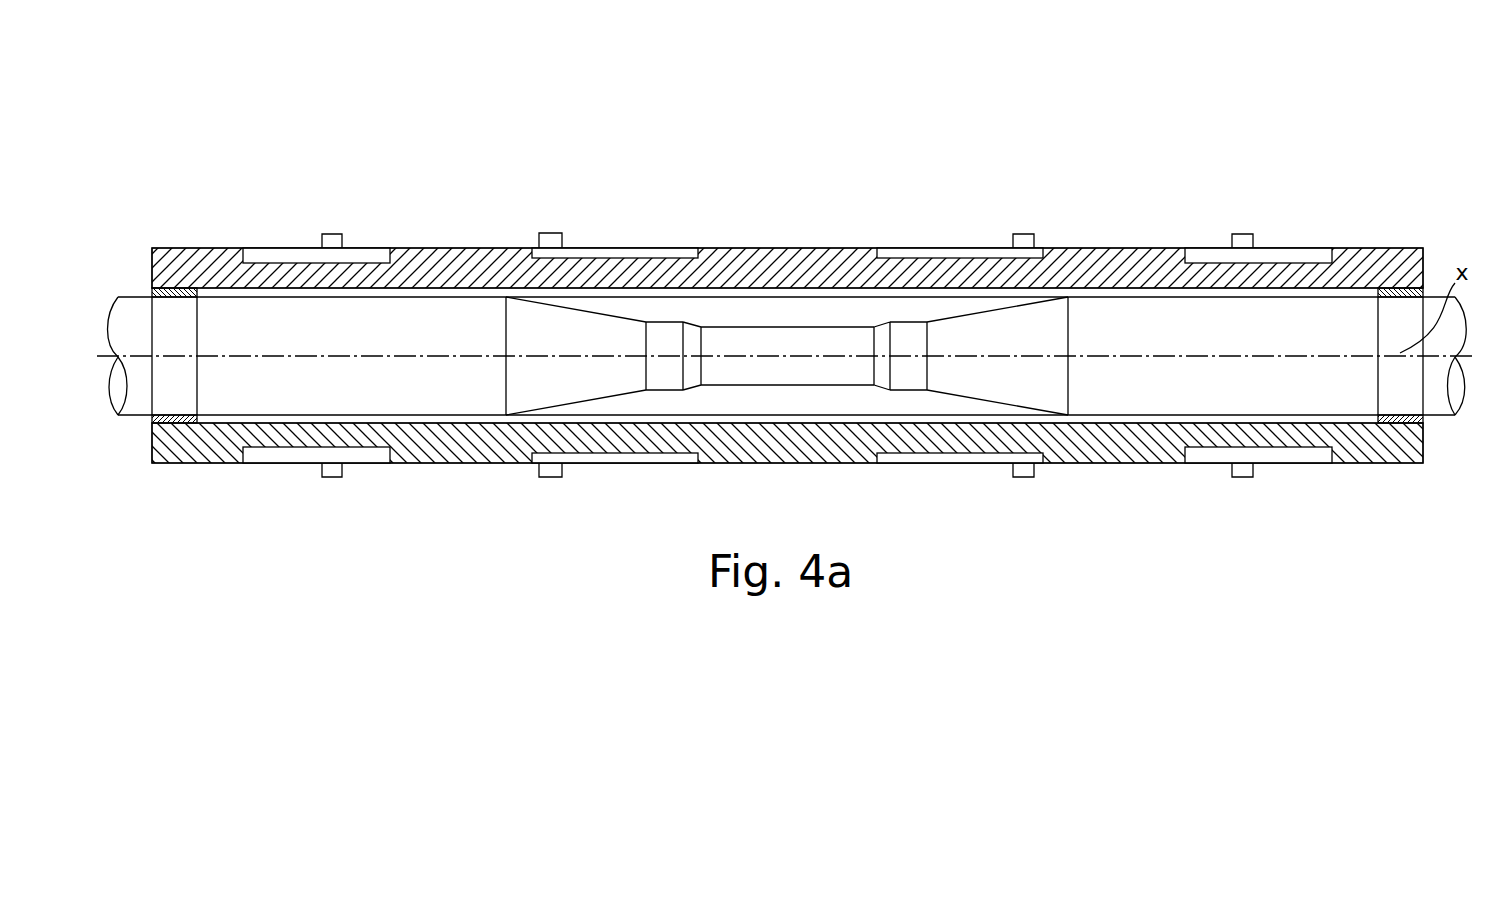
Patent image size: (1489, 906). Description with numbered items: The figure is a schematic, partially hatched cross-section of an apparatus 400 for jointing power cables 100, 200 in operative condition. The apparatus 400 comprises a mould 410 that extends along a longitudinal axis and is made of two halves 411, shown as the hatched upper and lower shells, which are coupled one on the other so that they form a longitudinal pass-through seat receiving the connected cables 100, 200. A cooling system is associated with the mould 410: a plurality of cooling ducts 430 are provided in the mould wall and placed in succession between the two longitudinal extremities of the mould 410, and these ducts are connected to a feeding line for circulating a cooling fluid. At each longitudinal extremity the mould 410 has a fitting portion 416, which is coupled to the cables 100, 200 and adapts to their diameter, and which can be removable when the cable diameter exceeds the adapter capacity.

The apparatus 400 is at (795, 137).
The mould 410 is at (218, 463).
The halves of the mould 411 is at (183, 262).
The fitting portion 416 is at (152, 292).
The cooling ducts 430 is at (355, 257).
The power cable 100 is at (545, 408).
The power cable 200 is at (997, 408).